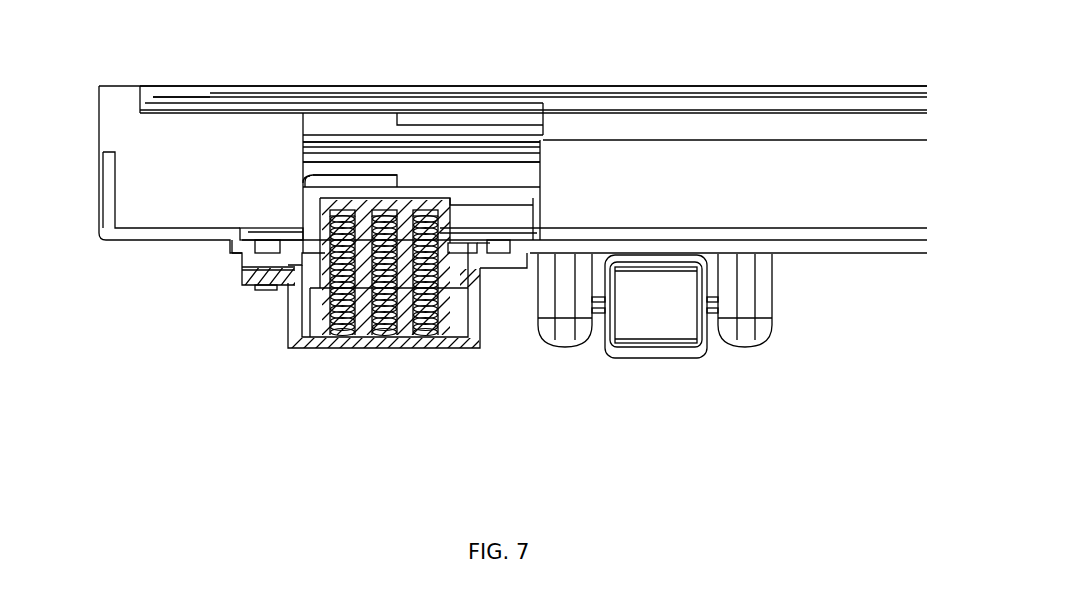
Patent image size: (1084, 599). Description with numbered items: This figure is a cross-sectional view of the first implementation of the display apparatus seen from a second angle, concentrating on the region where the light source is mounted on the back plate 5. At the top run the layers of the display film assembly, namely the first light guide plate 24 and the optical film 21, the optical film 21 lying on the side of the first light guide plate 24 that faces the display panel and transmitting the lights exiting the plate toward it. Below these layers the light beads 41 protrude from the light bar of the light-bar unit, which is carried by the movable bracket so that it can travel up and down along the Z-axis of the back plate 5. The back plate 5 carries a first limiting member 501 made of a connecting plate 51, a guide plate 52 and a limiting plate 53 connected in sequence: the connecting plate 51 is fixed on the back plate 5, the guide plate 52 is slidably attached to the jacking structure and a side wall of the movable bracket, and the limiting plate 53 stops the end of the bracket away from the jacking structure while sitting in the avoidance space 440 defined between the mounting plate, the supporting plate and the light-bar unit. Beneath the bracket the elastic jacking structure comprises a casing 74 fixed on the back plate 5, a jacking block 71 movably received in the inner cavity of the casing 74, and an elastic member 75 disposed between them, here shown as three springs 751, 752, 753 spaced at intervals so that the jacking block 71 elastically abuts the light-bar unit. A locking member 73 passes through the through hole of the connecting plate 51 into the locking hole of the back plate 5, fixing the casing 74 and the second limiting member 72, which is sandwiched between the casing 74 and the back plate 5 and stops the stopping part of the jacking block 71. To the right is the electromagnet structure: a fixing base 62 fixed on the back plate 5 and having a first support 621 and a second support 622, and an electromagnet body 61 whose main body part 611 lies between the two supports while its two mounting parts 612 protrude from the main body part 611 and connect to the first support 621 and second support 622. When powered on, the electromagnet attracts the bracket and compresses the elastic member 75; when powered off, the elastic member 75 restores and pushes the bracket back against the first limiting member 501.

The back plate 5 is at (128, 103).
The optical film 21 is at (313, 147).
The first light guide plate 24 is at (313, 166).
The limiting plate 53 is at (305, 183).
The guide plate 52 is at (312, 215).
The connecting plate 51 is at (238, 238).
The first limiting member 501 is at (153, 372).
The locking member 73 is at (270, 268).
The second limiting member 72 is at (252, 248).
The casing 74 is at (298, 277).
The jacking block 71 is at (407, 208).
The spring 751 is at (345, 337).
The spring 752 is at (390, 337).
The spring 753 is at (440, 315).
The elastic member 75 is at (418, 358).
The light beads 41 is at (496, 180).
The avoidance space 440 is at (360, 158).
The first support 621 is at (566, 305).
The second support 622 is at (741, 332).
The fixing base 62 is at (657, 369).
The main body part 611 is at (710, 300).
The mounting parts 612 is at (675, 293).
The electromagnet body 61 is at (765, 306).